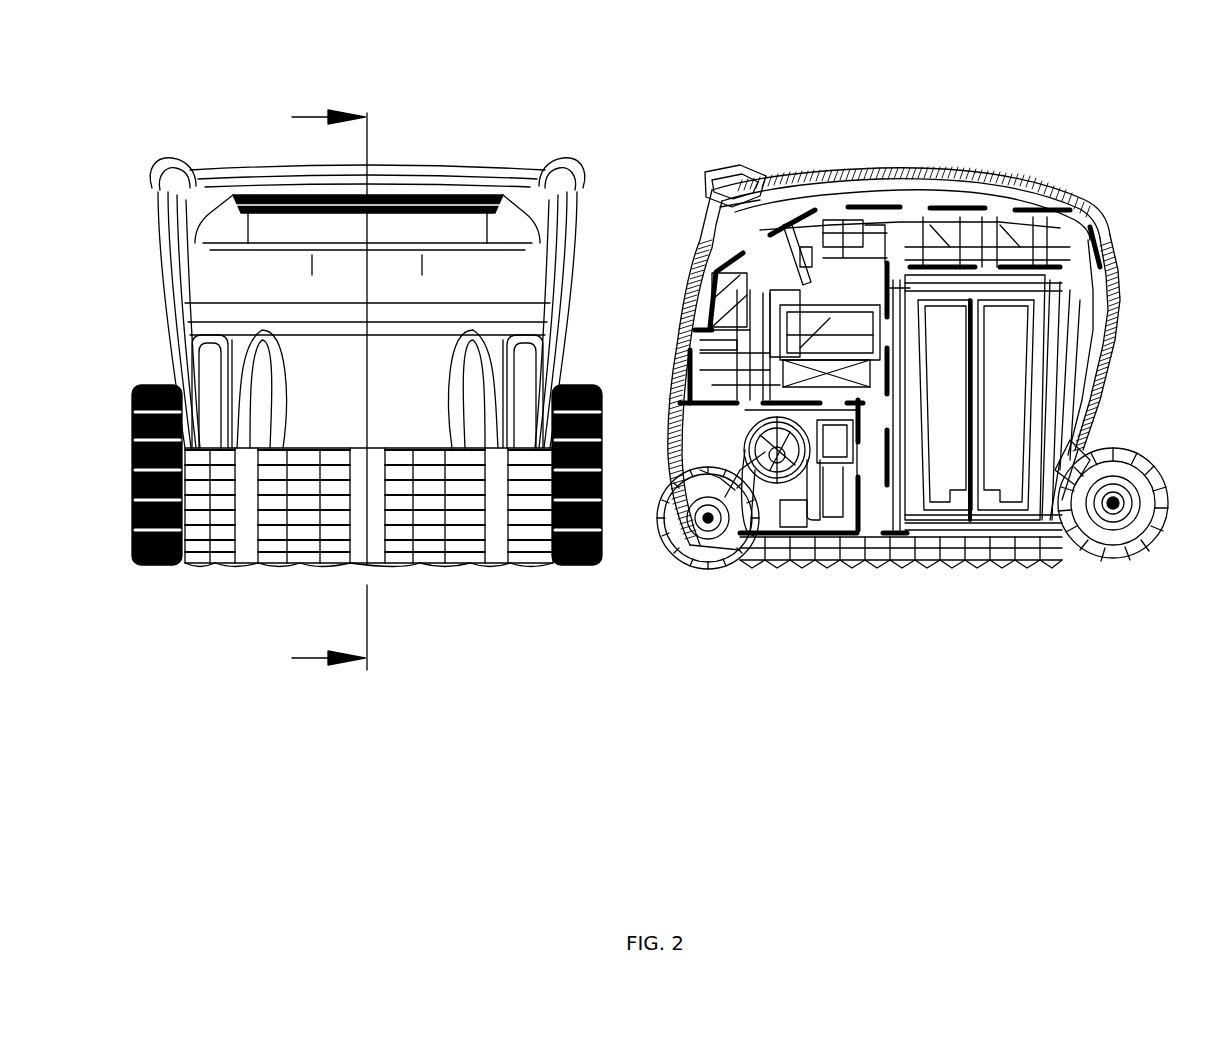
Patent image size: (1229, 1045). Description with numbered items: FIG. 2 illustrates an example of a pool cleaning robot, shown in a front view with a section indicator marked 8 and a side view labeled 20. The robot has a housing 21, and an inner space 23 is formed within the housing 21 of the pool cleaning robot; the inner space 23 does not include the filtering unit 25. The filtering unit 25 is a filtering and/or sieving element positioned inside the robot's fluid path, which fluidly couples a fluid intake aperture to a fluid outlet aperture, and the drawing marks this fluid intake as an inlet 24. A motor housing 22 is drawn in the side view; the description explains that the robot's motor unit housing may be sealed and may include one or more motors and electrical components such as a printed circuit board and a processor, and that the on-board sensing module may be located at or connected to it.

The section line 8 is at (329, 404).
The robotic pool cleaner 20 is at (560, 634).
The housing 21 is at (833, 157).
The motor housing 22 is at (727, 437).
The inner space 23 is at (943, 183).
The inlet 24 is at (953, 543).
The filtering unit 25 is at (1043, 555).